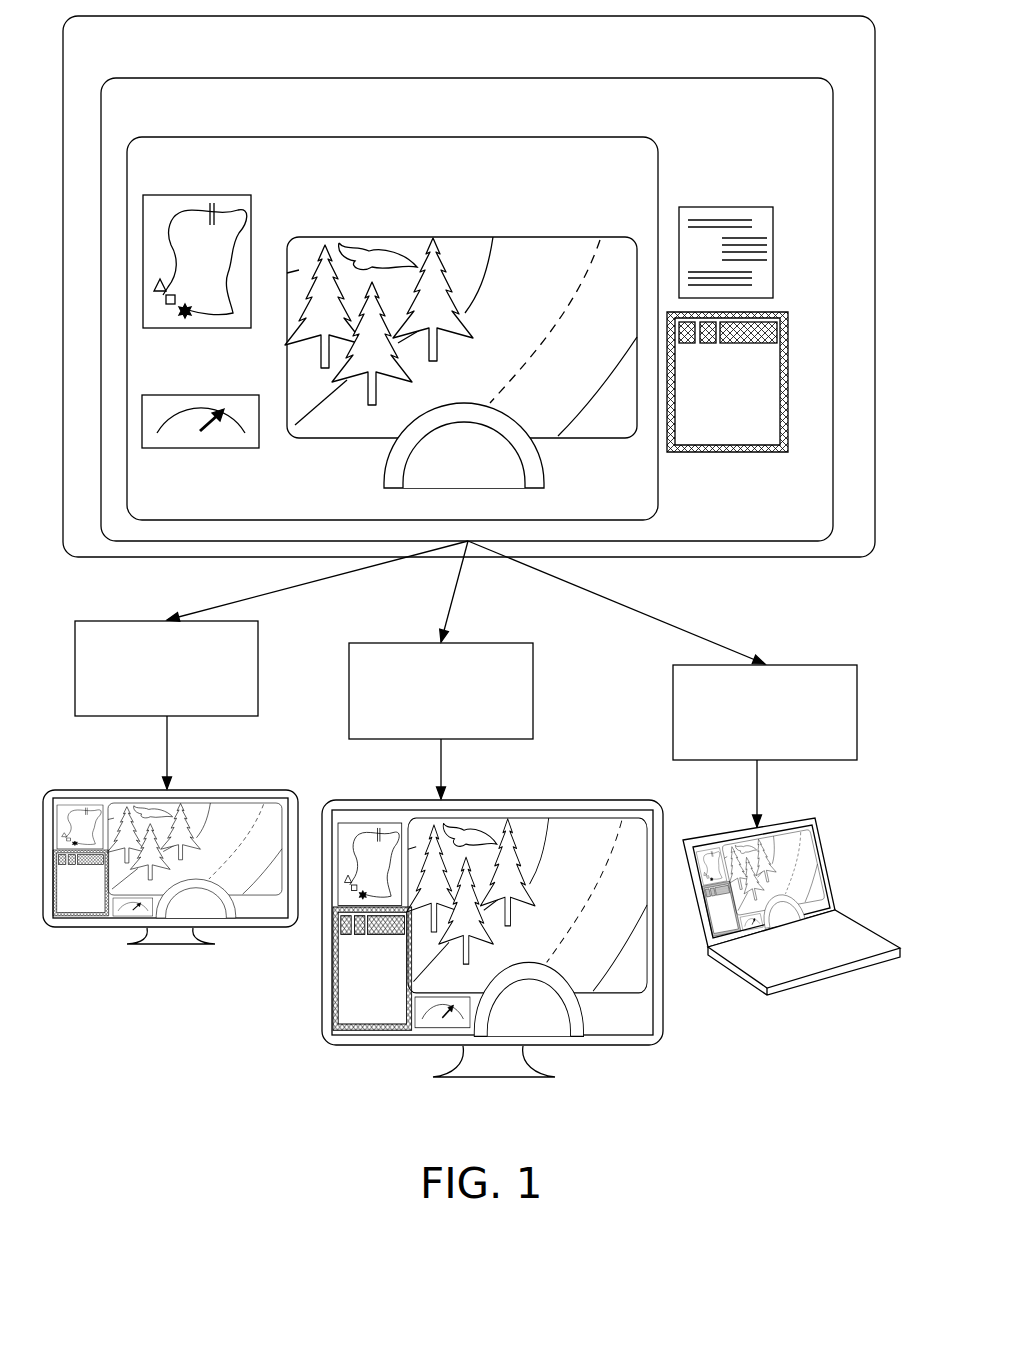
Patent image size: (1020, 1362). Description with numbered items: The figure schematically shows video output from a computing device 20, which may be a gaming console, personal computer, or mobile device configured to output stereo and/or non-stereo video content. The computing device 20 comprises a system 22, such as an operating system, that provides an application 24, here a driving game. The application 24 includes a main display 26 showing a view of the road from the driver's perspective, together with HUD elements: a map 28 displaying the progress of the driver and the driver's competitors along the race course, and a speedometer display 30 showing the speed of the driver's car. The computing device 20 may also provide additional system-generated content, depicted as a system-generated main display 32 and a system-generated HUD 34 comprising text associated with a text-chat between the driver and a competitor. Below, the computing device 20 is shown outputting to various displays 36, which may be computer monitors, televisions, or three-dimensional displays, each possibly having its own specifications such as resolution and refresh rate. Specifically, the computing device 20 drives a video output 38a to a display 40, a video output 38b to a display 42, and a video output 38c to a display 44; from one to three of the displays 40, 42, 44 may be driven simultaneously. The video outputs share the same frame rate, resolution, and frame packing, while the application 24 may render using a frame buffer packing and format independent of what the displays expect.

The computing device 20 is at (600, 52).
The system 22 is at (532, 114).
The application 24 is at (485, 171).
The main display 26 is at (310, 440).
The map 28 is at (168, 329).
The speedometer display 30 is at (157, 449).
The system-generated main display 32 is at (695, 453).
The system-generated HUD 34 is at (760, 228).
The displays 36 is at (471, 962).
The video output 38a is at (148, 704).
The video output 38b is at (422, 726).
The video output 38c is at (784, 749).
The display 40 is at (58, 928).
The display 42 is at (345, 1047).
The display 44 is at (823, 850).